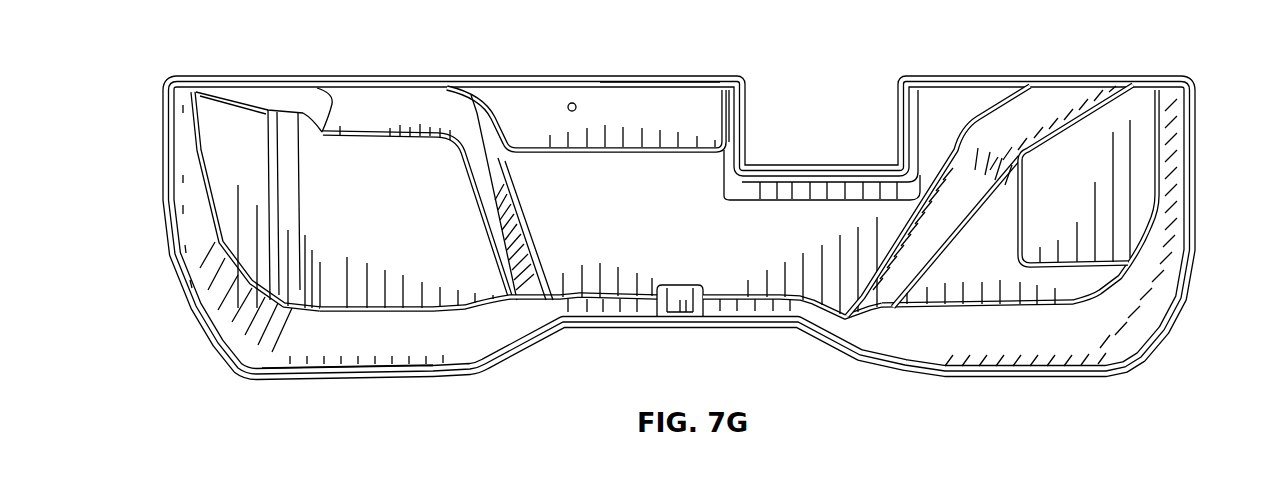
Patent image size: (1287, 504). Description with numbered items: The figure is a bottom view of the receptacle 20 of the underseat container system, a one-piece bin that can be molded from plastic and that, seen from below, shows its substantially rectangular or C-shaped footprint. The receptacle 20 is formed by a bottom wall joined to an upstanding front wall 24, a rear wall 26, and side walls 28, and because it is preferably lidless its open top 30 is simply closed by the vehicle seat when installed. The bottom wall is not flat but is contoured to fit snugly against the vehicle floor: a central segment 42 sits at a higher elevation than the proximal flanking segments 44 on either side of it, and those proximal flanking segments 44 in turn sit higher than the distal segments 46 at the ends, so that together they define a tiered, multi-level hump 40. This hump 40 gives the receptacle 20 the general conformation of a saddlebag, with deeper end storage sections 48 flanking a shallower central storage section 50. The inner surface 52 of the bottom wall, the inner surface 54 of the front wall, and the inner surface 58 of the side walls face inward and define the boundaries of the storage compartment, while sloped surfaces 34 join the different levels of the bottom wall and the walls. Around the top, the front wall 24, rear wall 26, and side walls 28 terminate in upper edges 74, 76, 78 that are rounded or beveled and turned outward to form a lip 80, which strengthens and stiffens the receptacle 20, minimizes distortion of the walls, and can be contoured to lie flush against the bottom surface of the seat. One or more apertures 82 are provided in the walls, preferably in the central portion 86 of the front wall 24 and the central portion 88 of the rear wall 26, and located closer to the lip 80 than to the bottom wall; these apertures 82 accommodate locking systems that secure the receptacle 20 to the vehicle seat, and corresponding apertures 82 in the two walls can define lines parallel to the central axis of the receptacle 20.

The receptacle 20 is at (217, 41).
The front wall 24 is at (500, 107).
The rear wall 26 is at (357, 343).
The side walls 28 is at (193, 183).
The open top 30 is at (695, 103).
The sloped surface 34 is at (1047, 97).
The hump 40 is at (772, 213).
The central segment 42 is at (707, 282).
The proximal flanking segments 44 is at (960, 277).
The distal segments 46 is at (1132, 108).
The deeper end storage sections 48 is at (333, 278).
The shallower central storage section 50 is at (627, 283).
The inner surface of bottom wall 52 is at (753, 275).
The inner surface of front wall 54 is at (265, 102).
The inner surface of side walls 58 is at (1157, 277).
The upper edge of front wall 74 is at (442, 80).
The upper edge of rear wall 76 is at (412, 372).
The upper edge of side walls 78 is at (1170, 222).
The lip 80 is at (988, 78).
The apertures 82 is at (575, 103).
The central portion of front wall 86 is at (655, 75).
The central portion of rear wall 88 is at (857, 337).